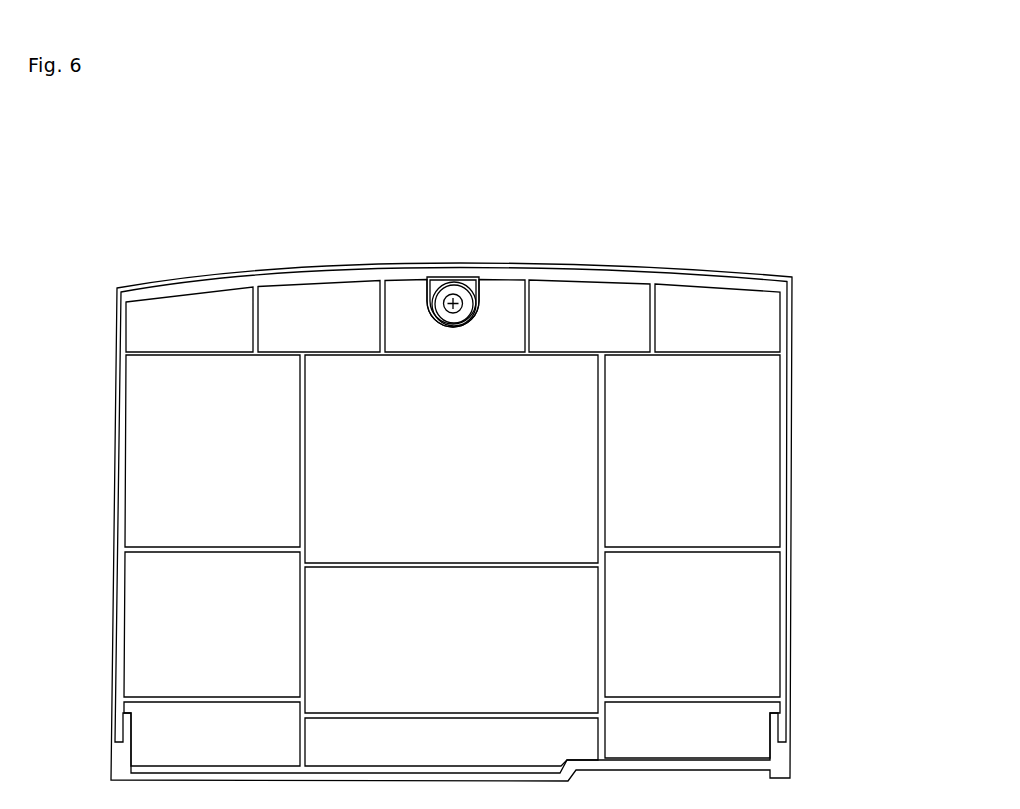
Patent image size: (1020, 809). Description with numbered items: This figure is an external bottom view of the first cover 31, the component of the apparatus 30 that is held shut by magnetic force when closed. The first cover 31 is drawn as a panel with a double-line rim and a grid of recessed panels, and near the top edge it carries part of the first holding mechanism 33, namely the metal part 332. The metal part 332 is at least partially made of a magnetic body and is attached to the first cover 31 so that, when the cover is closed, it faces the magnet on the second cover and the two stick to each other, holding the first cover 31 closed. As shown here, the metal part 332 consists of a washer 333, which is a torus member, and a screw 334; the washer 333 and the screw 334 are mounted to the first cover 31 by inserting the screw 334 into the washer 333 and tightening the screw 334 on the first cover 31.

The rear cover 30 is at (507, 522).
The first cover 31 is at (790, 468).
The first holding mechanism 33 is at (485, 249).
The metal part 332 is at (465, 281).
The washer 333 is at (465, 317).
The screw 334 is at (449, 310).